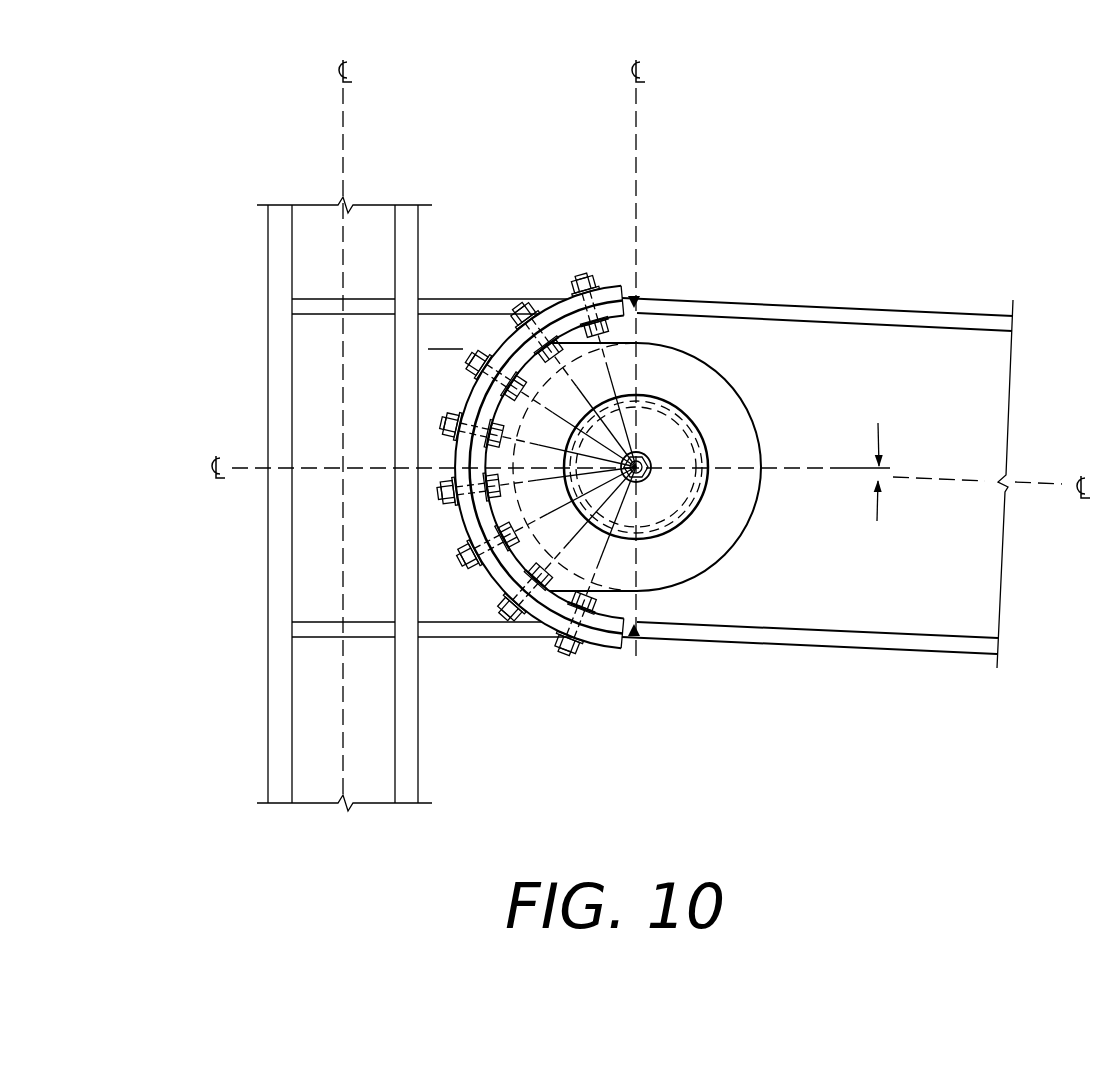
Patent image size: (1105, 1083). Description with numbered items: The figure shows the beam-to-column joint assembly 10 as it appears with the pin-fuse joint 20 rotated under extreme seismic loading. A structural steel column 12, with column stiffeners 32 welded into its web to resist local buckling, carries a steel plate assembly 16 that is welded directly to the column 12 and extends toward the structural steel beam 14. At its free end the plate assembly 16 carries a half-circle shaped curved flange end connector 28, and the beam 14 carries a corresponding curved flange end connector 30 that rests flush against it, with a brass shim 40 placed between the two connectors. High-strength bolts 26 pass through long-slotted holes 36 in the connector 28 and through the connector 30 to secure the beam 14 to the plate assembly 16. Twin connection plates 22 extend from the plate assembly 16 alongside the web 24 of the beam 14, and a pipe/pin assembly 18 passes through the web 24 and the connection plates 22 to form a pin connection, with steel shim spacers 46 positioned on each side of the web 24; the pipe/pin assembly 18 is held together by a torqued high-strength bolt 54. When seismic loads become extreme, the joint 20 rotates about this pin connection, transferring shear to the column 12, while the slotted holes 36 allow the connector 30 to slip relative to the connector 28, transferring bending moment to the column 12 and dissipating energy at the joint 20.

The beam-to-column joint assembly 10 is at (906, 219).
The structural steel column 12 is at (293, 504).
The structural steel beam 14 is at (817, 434).
The steel plate assembly 16 is at (363, 397).
The pipe/pin assembly 18 is at (692, 409).
The pin-fuse joint 20 is at (522, 669).
The connection plates 22 is at (603, 542).
The web of the beam 24 is at (925, 385).
The high-strength bolts 26 is at (645, 304).
The curved flange end connector 28 is at (608, 648).
The curved flange end connector 30 is at (665, 606).
The column stiffeners 32 is at (275, 539).
The long-slotted holes 36 is at (402, 478).
The brass shim 40 is at (540, 423).
The steel shim spacers 46 is at (399, 412).
The high-strength bolt 54 is at (665, 460).